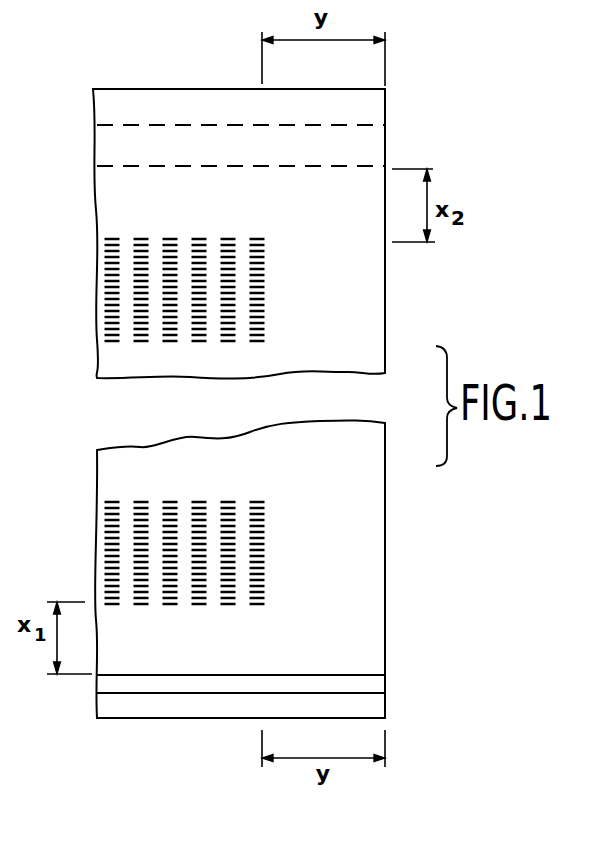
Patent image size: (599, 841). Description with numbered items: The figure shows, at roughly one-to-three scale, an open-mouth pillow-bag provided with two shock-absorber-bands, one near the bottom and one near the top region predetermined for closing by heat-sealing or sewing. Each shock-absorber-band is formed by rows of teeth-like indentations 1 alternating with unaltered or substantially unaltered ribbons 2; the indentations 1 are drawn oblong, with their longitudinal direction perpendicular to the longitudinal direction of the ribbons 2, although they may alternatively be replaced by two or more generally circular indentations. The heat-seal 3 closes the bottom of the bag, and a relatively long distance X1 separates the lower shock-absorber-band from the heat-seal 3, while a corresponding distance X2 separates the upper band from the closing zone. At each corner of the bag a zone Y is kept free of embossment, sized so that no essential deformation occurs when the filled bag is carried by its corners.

The rows of teeth-like indentations 1 is at (112, 236).
The unaltered ribbons 2 is at (183, 240).
The heat-seal 3 is at (97, 683).